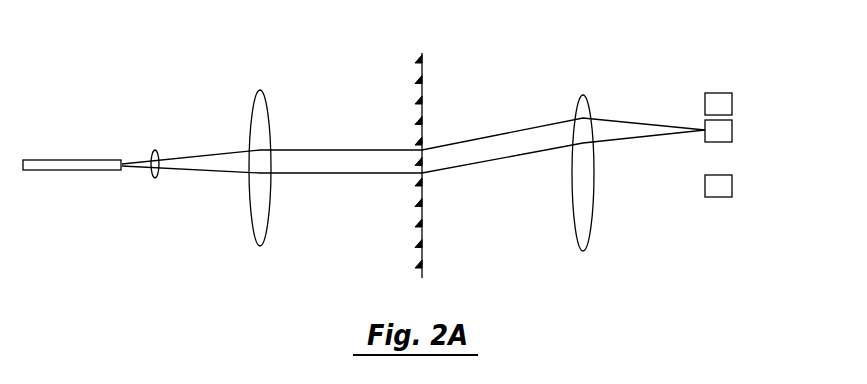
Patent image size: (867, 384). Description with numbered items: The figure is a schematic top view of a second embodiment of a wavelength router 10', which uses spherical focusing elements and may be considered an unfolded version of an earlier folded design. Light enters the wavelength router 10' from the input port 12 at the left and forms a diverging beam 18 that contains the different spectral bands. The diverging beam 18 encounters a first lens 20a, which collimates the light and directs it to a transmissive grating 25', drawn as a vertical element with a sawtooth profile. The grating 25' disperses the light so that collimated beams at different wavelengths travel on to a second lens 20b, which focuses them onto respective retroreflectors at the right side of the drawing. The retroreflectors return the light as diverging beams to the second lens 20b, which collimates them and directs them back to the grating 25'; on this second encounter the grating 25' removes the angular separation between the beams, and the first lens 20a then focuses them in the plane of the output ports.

The wavelength router 10' is at (413, 196).
The input port 12 is at (115, 160).
The diverging beam 18 is at (157, 152).
The first lens 20a is at (272, 125).
The second lens 20b is at (587, 105).
The transmissive grating 25' is at (455, 147).